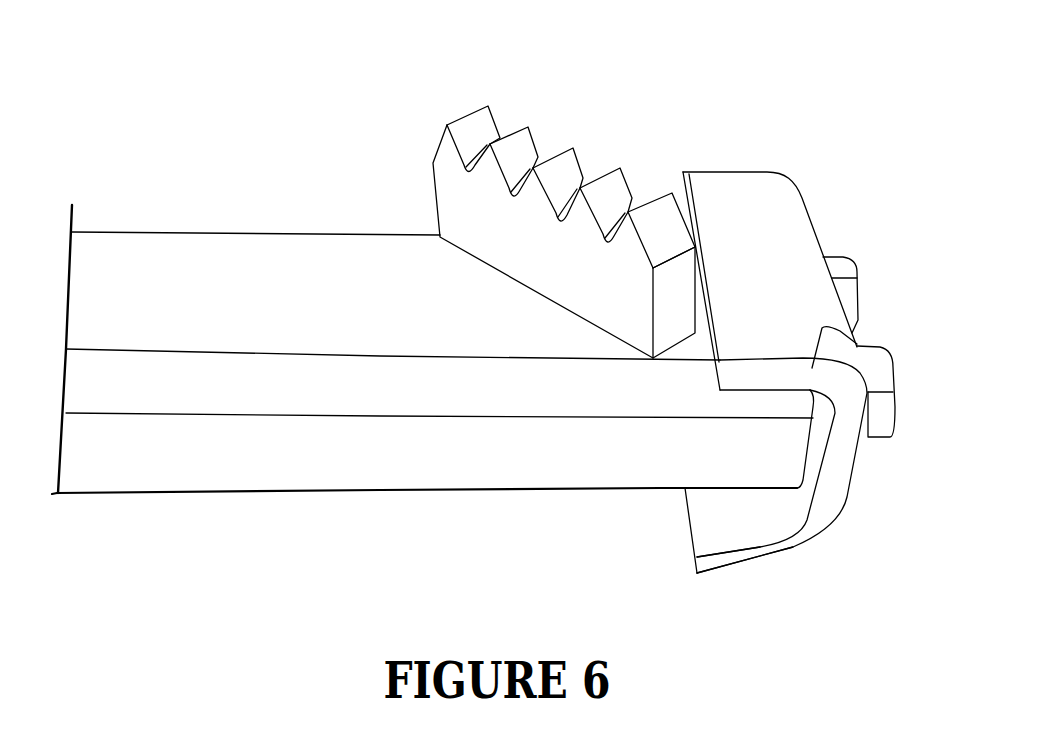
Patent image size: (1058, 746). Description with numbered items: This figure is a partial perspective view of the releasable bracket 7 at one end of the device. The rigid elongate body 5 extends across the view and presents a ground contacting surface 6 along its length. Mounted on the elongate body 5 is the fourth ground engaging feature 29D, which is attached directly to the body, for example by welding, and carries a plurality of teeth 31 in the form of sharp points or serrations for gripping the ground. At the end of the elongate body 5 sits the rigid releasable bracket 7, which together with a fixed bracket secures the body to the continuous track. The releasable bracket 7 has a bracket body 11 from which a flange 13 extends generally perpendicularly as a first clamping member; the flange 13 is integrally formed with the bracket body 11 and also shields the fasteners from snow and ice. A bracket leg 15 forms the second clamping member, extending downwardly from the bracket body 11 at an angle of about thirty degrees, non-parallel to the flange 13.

The elongate body 5 is at (162, 232).
The ground contacting surface 6 is at (263, 270).
The fourth ground engaging feature 29D is at (514, 193).
The teeth 31 is at (672, 193).
The releasable bracket 7 is at (753, 177).
The flange 13 is at (853, 330).
The bracket body 11 is at (830, 495).
The bracket leg 15 is at (757, 558).